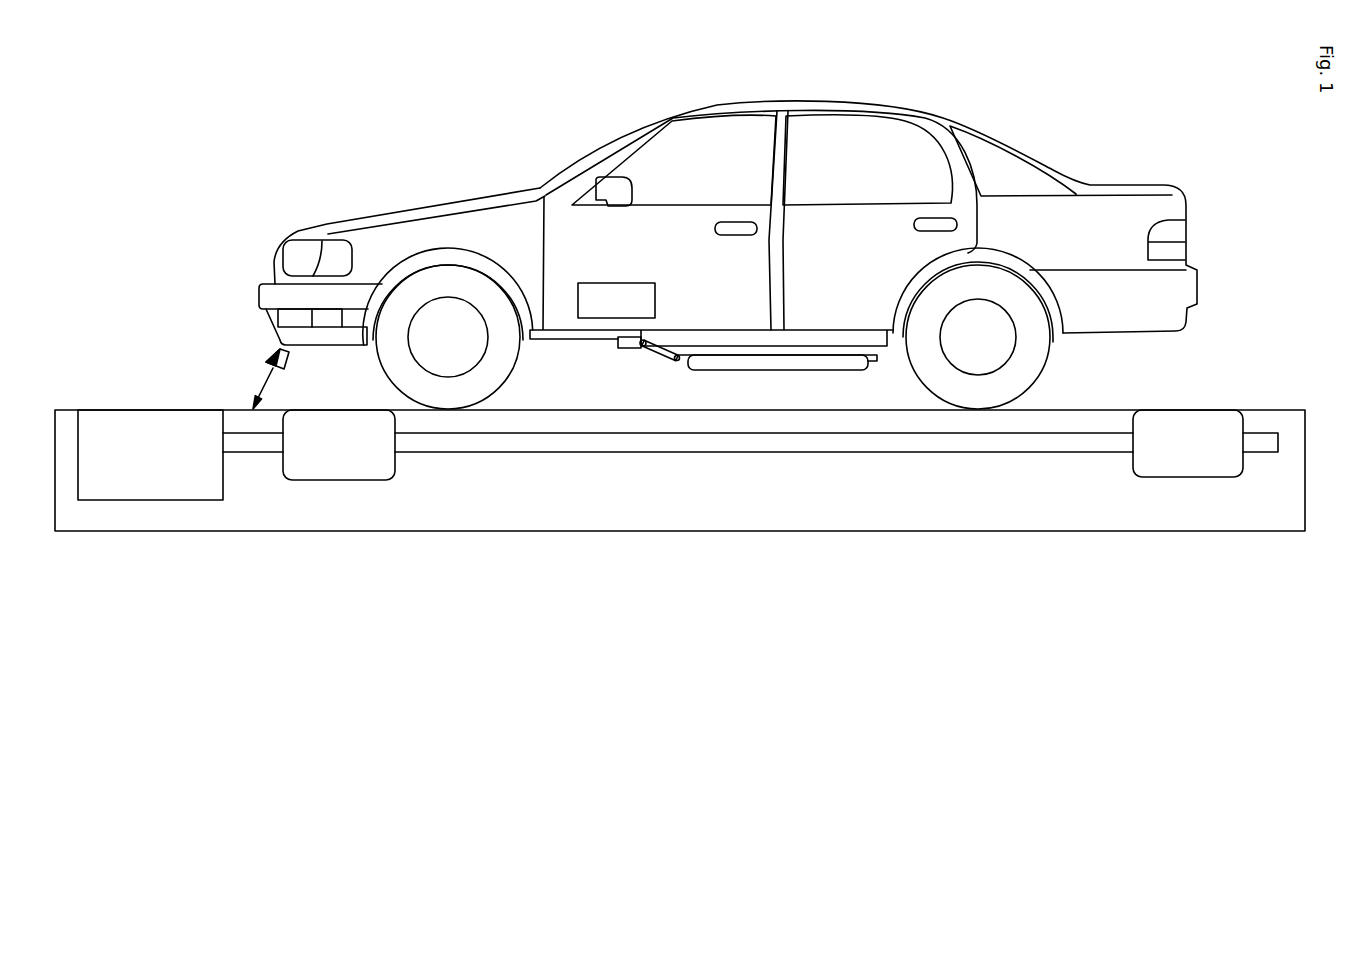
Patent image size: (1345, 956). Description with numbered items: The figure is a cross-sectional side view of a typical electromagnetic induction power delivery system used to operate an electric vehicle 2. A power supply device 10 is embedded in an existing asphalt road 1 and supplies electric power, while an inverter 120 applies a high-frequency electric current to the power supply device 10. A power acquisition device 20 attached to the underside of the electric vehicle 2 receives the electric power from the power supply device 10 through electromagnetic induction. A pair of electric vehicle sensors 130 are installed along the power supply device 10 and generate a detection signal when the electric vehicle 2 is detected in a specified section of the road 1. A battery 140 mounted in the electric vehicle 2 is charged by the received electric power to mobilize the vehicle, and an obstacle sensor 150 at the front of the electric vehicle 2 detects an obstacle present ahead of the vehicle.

The asphalt road 1 is at (1260, 409).
The electric vehicle 2 is at (930, 112).
The power supply device 10 is at (973, 454).
The power acquisition device 20 is at (752, 364).
The inverter 120 is at (133, 417).
The electric vehicle sensors 130 is at (335, 481).
The battery 140 is at (613, 320).
The obstacle sensor 150 is at (270, 351).